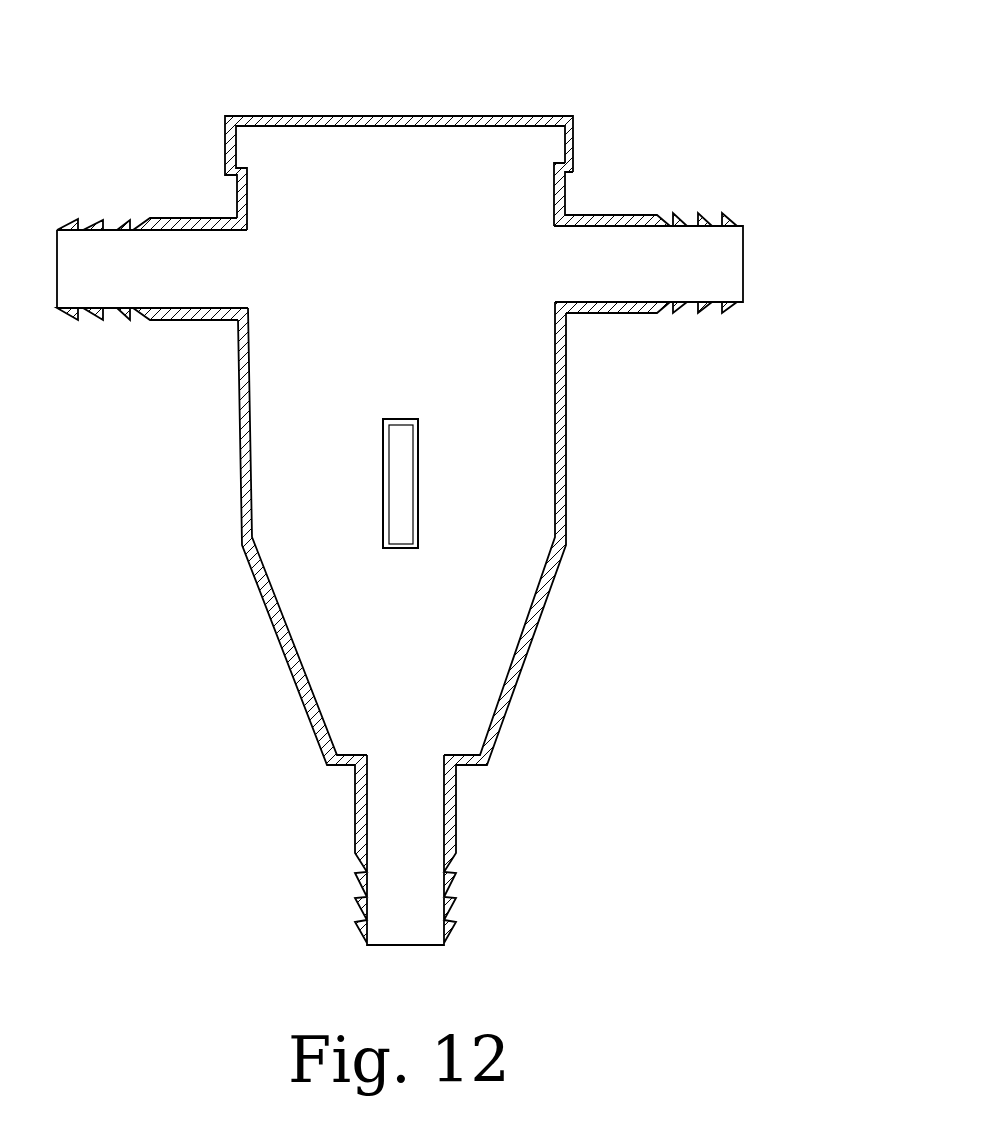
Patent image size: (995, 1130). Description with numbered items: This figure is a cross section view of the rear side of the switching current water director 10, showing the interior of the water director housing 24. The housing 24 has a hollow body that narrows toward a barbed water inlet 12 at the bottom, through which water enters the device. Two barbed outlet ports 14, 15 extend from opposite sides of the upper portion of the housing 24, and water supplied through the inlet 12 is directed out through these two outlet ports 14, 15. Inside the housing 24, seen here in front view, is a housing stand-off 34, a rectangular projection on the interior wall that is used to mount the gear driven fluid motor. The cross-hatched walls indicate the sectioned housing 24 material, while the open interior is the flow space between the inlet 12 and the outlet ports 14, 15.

The switching current water director 10 is at (523, 115).
The water inlet 12 is at (448, 942).
The outlet port 14 is at (233, 257).
The outlet port 15 is at (578, 265).
The water director housing 24 is at (568, 213).
The housing stand-off 34 is at (402, 478).